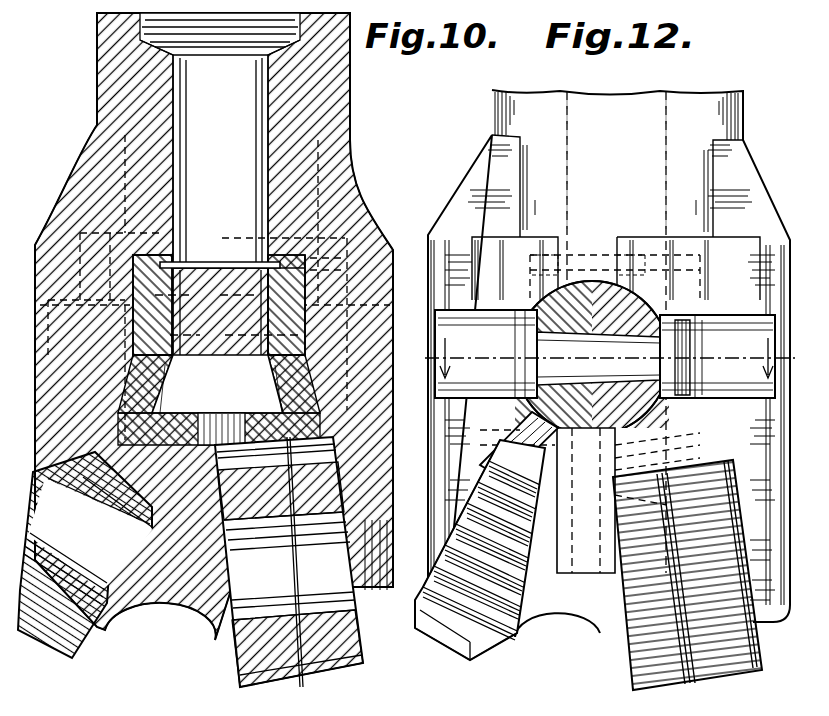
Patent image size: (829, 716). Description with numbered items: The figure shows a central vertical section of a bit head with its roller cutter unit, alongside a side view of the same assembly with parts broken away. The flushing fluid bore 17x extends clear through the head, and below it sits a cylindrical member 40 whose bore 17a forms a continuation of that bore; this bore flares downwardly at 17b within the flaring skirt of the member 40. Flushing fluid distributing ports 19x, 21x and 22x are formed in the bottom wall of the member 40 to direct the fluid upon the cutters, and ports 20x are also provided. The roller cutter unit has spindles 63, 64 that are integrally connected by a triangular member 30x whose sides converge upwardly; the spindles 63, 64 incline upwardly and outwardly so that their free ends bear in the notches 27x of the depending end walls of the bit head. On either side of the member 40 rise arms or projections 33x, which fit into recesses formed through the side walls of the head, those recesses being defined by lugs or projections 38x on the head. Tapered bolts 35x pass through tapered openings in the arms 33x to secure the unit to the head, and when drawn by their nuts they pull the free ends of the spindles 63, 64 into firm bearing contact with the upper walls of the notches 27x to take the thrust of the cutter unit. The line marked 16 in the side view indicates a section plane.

In FIG. 10, the flushing fluid bore 17x is at (220, 160).
In FIG. 12, the flushing fluid bore 17x is at (666, 128).
In FIG. 10, the cylindrical member 40 is at (178, 268).
In FIG. 10, the bore of the cylindrical member 17a is at (219, 305).
In FIG. 10, the downwardly flaring bore portion 17b is at (219, 384).
In FIG. 10, the flushing fluid distributing port 21x is at (219, 417).
In FIG. 10, the flushing fluid distributing port 19x is at (233, 425).
In FIG. 10, the bolt 35x is at (125, 348).
In FIG. 12, the bolt 35x is at (605, 354).
In FIG. 10, the flushing fluid distributing port 22x is at (318, 360).
In FIG. 10, the spindle 63 is at (85, 555).
In FIG. 10, the spindle 64 is at (289, 562).
In FIG. 10, the notch 27x is at (370, 675).
In FIG. 10, the triangular member 30x is at (185, 560).
In FIG. 12, the triangular member 30x is at (585, 600).
In FIG. 12, the lug 38x is at (637, 283).
In FIG. 12, the upwardly extending arm 33x is at (593, 310).
In FIG. 12, the section line 16 is at (609, 358).
In FIG. 12, the port 20x is at (585, 565).